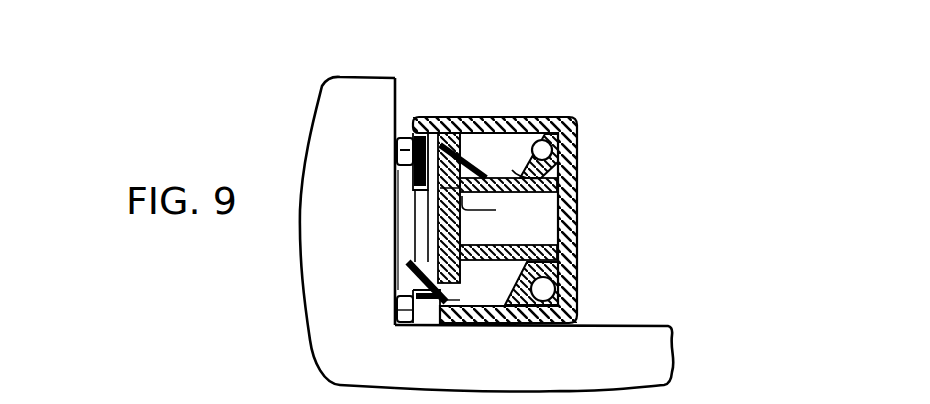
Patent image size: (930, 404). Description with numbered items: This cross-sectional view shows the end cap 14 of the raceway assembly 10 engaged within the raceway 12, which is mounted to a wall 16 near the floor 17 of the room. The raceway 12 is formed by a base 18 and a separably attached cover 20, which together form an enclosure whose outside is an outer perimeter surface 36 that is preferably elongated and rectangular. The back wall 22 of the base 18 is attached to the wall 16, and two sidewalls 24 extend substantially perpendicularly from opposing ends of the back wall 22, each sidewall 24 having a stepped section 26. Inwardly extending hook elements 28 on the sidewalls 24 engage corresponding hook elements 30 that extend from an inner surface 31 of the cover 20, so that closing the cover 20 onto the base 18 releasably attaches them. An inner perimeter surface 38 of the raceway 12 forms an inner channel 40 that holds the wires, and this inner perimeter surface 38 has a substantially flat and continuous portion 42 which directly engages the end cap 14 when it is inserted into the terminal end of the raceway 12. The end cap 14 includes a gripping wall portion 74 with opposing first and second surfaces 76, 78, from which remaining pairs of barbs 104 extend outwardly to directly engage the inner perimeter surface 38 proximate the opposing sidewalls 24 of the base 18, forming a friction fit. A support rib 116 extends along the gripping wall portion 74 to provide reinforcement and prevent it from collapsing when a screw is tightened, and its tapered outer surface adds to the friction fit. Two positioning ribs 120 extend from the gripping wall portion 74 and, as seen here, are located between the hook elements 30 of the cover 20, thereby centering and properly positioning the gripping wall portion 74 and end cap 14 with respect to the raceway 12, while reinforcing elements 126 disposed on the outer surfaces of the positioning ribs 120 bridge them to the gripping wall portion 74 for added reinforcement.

The raceway assembly 10 is at (509, 206).
The raceway 12 is at (502, 207).
The end cap 14 is at (428, 175).
The wall 16 is at (343, 114).
The floor 17 is at (658, 363).
The base 18 is at (398, 322).
The cover 20 is at (577, 283).
The back wall 22 is at (396, 228).
The sidewalls 24 is at (441, 325).
The stepped section 26 is at (410, 130).
The hook elements 28 is at (552, 152).
The hook elements 30 is at (528, 318).
The inner surface 31 is at (535, 205).
The outer perimeter surface 36 is at (535, 205).
The inner perimeter surface 38 is at (413, 273).
The inner channel 40 is at (535, 218).
The flat and continuous portion 42 is at (535, 218).
The gripping wall portion 74 is at (412, 160).
The first surface 76 is at (427, 130).
The second surface 78 is at (447, 302).
The remaining pairs of barbs 104 is at (447, 140).
The support rib 116 is at (430, 198).
The positioning ribs 120 is at (478, 206).
The reinforcing elements 126 is at (555, 172).